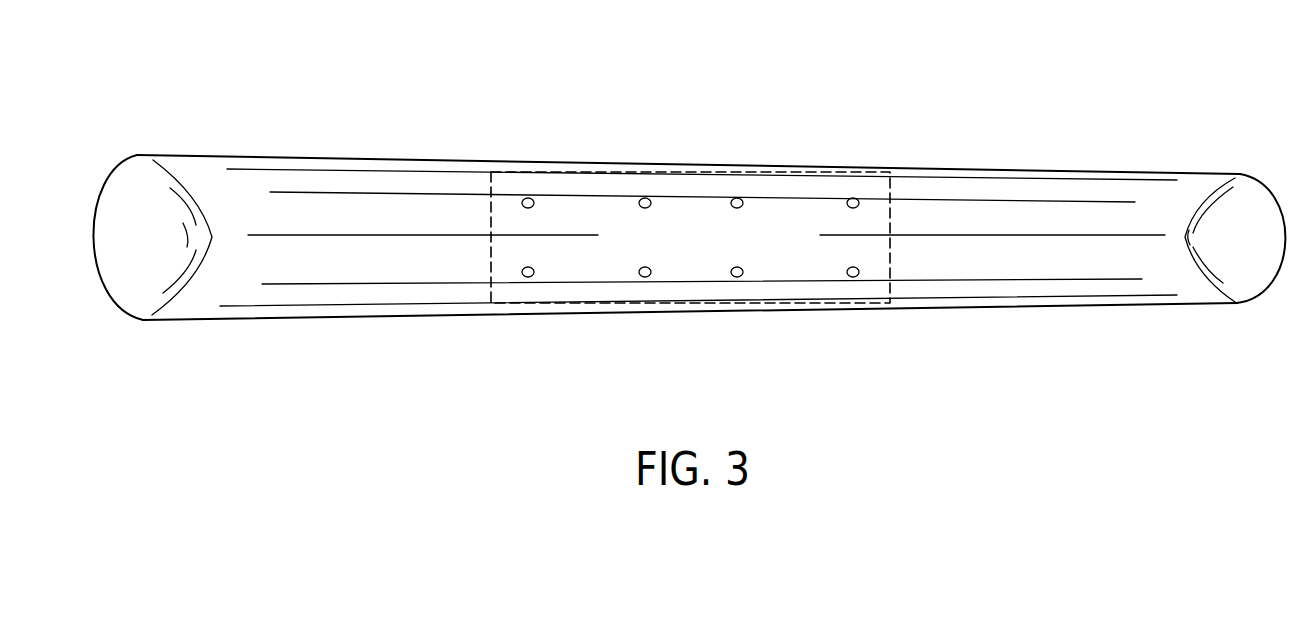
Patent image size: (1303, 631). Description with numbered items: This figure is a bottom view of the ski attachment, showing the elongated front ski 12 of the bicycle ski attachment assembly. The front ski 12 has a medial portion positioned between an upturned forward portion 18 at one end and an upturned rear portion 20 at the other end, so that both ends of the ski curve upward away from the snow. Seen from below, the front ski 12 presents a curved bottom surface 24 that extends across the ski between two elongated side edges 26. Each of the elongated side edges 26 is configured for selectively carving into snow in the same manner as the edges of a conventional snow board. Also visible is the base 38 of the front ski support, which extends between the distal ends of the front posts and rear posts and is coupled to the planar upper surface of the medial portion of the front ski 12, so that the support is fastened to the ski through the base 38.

The front ski 12 is at (749, 141).
The upturned forward portion 18 is at (1255, 190).
The upturned rear portion 20 is at (122, 172).
The curved bottom surface 24 is at (997, 190).
The elongated side edges 26 is at (616, 162).
The base 38 is at (560, 265).